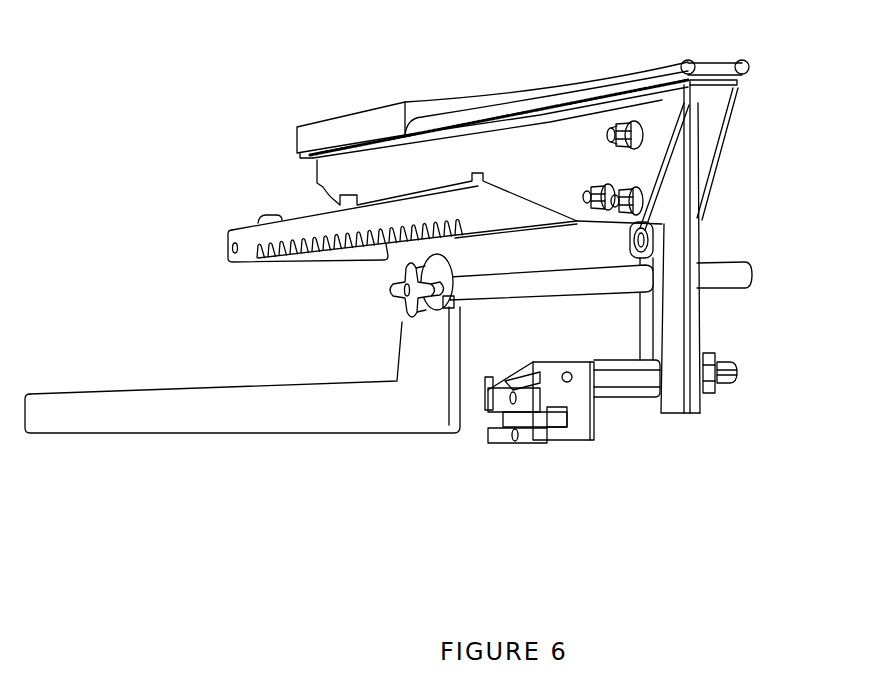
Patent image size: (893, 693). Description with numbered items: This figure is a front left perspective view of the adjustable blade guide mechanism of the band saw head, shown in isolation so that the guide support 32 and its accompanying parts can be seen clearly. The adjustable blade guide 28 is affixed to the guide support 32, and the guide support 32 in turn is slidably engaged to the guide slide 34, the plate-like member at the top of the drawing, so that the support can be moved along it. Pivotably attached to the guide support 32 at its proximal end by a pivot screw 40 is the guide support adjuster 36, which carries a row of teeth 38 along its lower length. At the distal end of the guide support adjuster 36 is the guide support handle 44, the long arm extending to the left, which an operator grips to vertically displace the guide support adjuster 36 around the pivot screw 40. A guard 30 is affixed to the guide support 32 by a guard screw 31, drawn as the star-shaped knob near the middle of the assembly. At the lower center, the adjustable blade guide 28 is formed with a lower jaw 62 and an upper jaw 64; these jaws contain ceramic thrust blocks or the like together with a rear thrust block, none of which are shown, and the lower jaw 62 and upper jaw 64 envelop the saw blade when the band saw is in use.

The adjustable blade guide 28 is at (580, 433).
The guard 30 is at (347, 417).
The guard screw 31 is at (402, 289).
The guide support 32 is at (668, 121).
The guide slide 34 is at (387, 115).
The guide support adjuster 36 is at (512, 212).
The teeth 38 is at (293, 262).
The pivot screw 40 is at (604, 208).
The guide support handle 44 is at (340, 258).
The lower jaw 62 is at (550, 437).
The upper jaw 64 is at (532, 386).